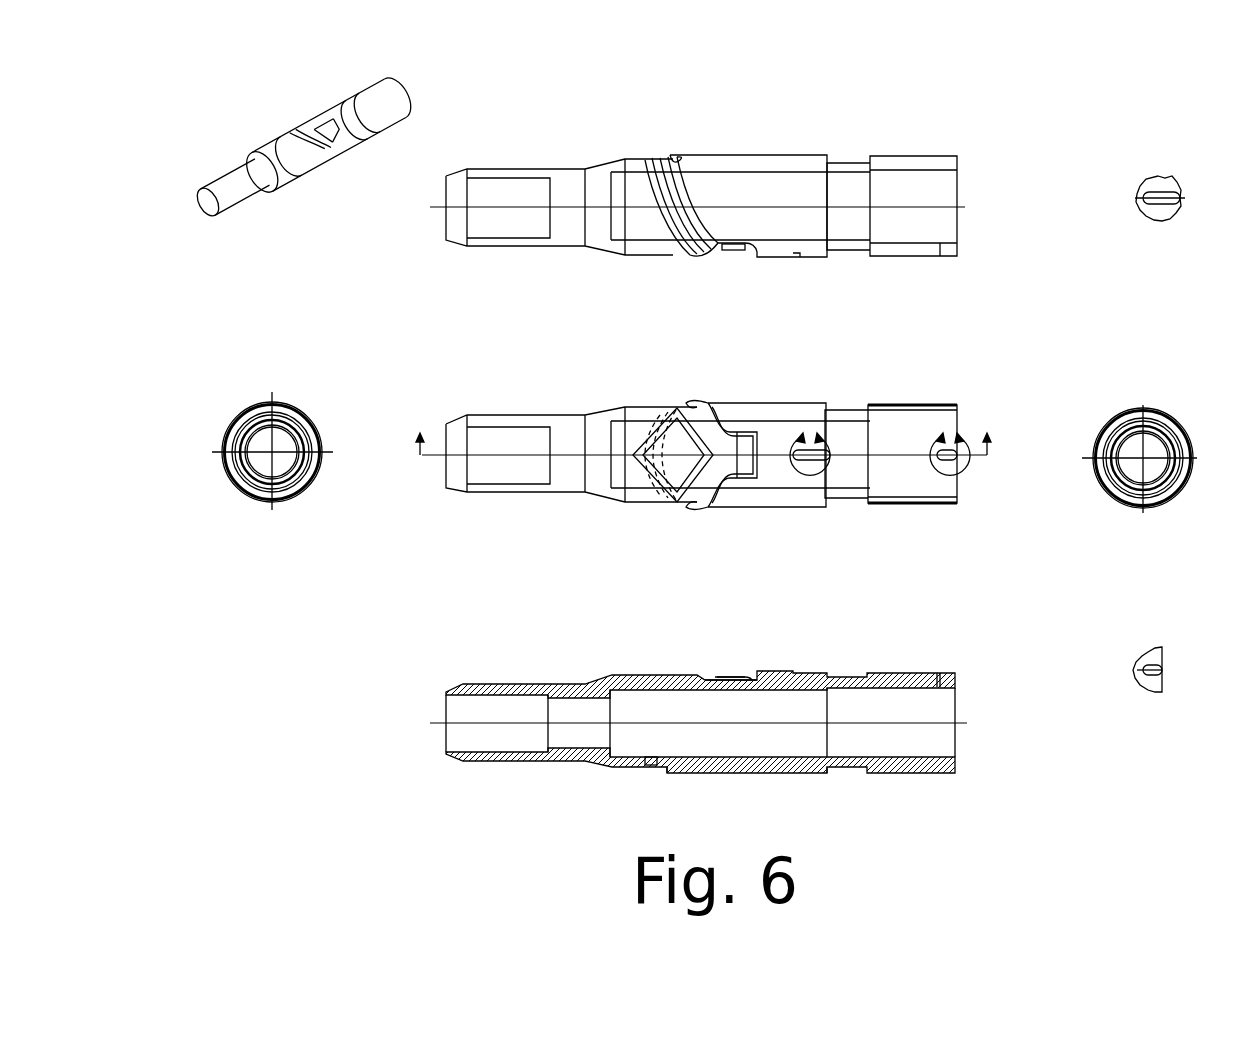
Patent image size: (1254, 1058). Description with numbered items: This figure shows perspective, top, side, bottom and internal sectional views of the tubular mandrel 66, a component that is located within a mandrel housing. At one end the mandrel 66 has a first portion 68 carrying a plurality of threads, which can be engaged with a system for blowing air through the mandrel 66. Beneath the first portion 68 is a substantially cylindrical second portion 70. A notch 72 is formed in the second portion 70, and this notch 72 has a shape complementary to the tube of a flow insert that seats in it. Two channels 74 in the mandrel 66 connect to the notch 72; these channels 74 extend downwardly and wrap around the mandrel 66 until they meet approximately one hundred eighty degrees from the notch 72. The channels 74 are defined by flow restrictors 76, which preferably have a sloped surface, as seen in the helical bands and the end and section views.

The tubular mandrel 66 is at (262, 88).
The first portion 68 is at (388, 88).
The second portion 70 is at (343, 150).
The notch 72 is at (322, 165).
The channels 74 is at (688, 183).
The flow restrictors 76 is at (678, 157).